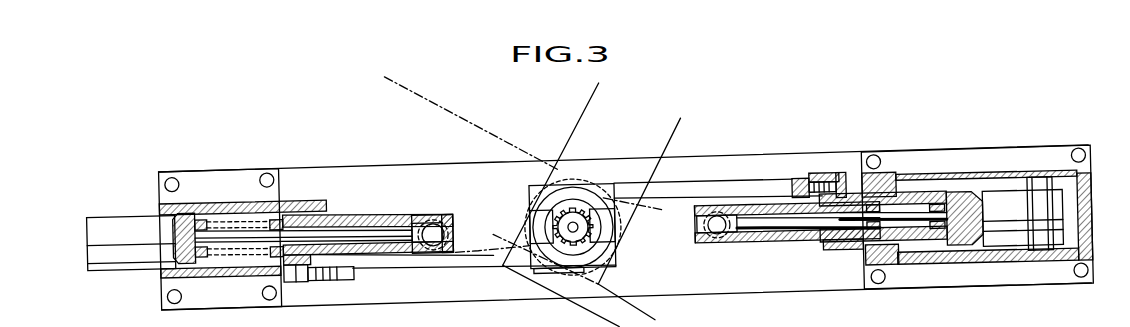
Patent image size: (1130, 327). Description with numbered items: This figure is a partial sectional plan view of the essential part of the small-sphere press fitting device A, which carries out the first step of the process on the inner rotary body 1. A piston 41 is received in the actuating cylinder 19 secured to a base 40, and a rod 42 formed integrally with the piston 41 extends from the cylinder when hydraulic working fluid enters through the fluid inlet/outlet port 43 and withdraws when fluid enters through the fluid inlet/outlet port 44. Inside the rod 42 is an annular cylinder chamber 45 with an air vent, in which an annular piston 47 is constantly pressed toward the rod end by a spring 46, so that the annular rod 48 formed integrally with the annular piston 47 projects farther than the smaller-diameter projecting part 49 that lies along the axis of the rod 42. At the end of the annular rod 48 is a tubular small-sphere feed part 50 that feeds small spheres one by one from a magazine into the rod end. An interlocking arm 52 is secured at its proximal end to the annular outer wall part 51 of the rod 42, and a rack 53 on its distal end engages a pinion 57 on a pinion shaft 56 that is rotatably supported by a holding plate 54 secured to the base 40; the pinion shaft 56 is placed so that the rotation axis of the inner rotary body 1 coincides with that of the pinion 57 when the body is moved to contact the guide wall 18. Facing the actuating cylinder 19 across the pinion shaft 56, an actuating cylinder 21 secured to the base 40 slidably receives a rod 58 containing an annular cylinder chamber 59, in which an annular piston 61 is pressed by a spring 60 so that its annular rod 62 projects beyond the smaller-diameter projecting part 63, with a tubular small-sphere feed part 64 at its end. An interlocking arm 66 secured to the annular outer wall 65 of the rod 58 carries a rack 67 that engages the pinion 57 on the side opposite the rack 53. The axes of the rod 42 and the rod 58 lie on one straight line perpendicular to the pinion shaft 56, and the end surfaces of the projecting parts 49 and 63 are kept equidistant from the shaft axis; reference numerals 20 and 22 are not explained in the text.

The inner rotary body 1 is at (575, 180).
The guide wall 18 is at (587, 314).
The actuating cylinder 19 is at (954, 178).
The guide tube 20 is at (722, 248).
The actuating cylinder 21 is at (195, 193).
The ball joint block 22 is at (438, 211).
The base 40 is at (757, 158).
The piston 41 is at (1045, 253).
The rod 42 is at (990, 200).
The fluid inlet/outlet port 43 is at (1087, 186).
The fluid inlet/outlet port 44 is at (902, 189).
The annular cylinder chamber 45 is at (923, 246).
The spring 46 is at (925, 209).
The annular piston 47 is at (857, 246).
The annular rod 48 is at (803, 246).
The smaller-diameter projecting part 49 is at (766, 246).
The tubular small-sphere feed part 50 is at (706, 224).
The annular outer wall part 51 is at (845, 190).
The interlocking arm 52 is at (695, 192).
The rack 53 is at (637, 208).
The holding plate 54 is at (598, 262).
The pinion shaft 56 is at (570, 226).
The pinion 57 is at (615, 248).
The rod 58 is at (141, 209).
The annular cylinder chamber 59 is at (223, 250).
The spring 60 is at (233, 211).
The annular piston 61 is at (297, 209).
The annular rod 62 is at (362, 216).
The smaller-diameter projecting part 63 is at (397, 224).
The tubular small-sphere feed part 64 is at (453, 235).
The annular outer wall 65 is at (297, 275).
The interlocking arm 66 is at (418, 264).
The rack 67 is at (494, 240).
The small-sphere press fitting device A is at (527, 130).